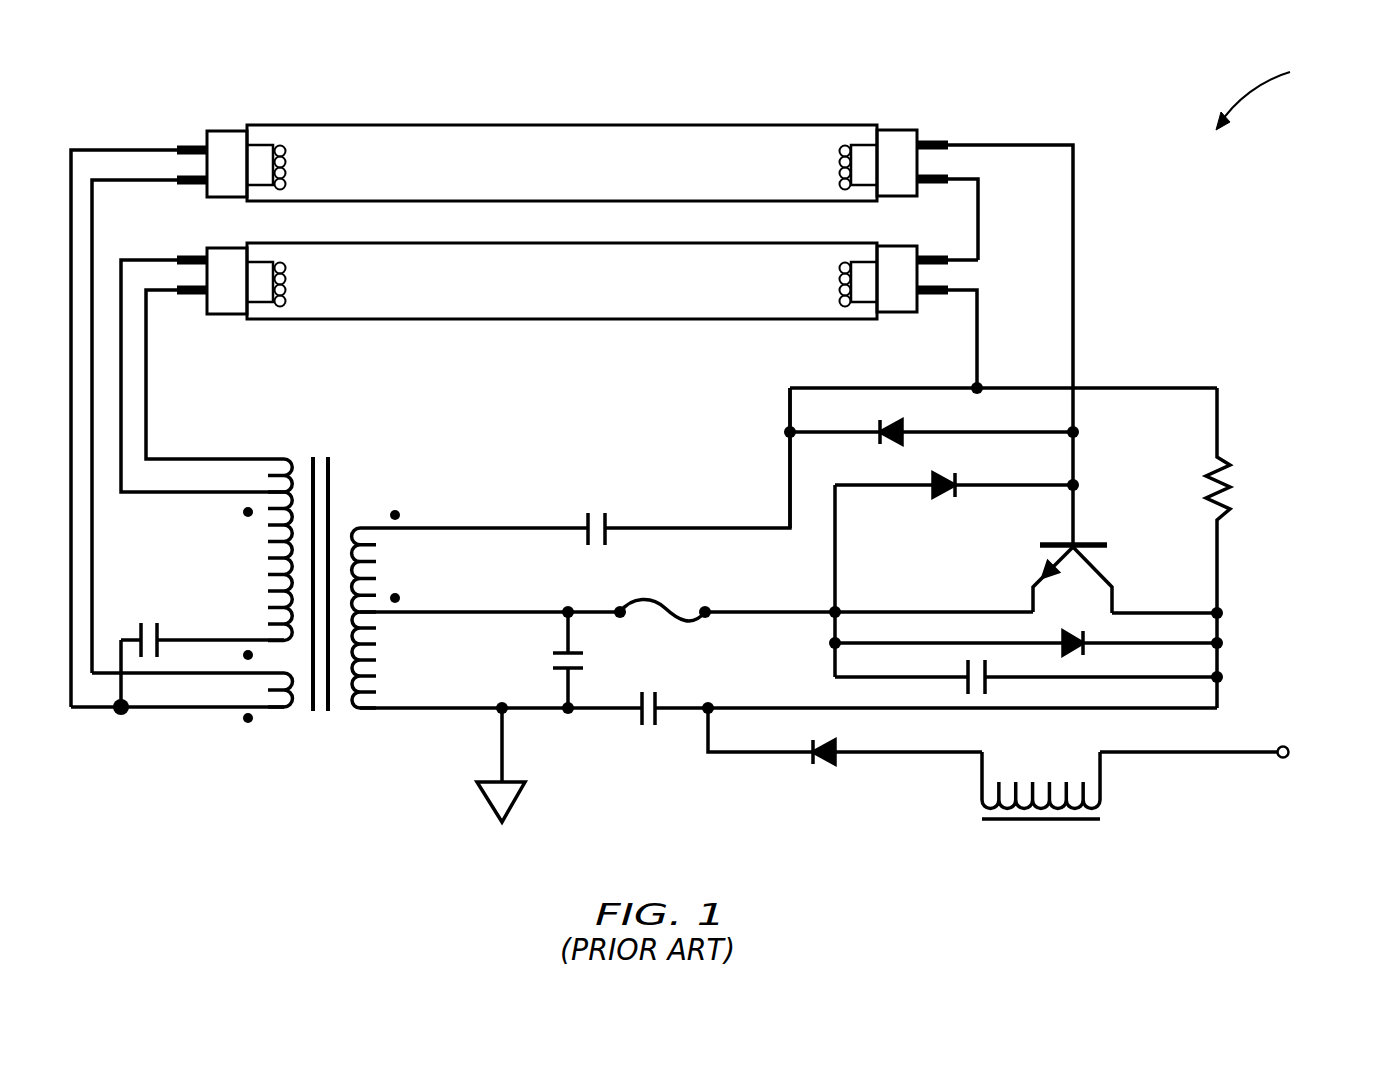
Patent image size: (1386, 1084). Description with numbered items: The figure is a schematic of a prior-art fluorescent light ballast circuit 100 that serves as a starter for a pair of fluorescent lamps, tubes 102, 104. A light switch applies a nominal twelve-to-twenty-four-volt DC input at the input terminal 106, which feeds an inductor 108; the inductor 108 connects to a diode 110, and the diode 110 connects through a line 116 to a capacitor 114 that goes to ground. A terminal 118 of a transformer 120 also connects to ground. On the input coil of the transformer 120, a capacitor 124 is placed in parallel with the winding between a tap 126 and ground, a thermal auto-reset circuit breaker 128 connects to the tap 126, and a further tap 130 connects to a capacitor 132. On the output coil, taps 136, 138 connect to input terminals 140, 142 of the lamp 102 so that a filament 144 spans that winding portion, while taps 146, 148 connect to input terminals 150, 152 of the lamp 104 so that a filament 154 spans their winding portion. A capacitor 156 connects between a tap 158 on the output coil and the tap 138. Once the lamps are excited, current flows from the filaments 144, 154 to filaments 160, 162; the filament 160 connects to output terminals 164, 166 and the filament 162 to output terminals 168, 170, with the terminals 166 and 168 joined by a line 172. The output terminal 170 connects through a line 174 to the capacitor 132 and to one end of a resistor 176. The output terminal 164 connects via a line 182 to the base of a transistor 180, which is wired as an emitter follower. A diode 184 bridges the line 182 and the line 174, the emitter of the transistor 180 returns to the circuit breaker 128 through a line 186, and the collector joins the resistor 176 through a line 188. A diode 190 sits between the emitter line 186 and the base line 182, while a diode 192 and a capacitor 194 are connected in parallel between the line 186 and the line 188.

The fluorescent light ballast circuit 100 is at (1285, 91).
The lamp 102 is at (472, 125).
The lamp 104 is at (482, 321).
The input terminal 106 is at (1289, 750).
The inductor 108 is at (1040, 823).
The diode 110 is at (823, 766).
The capacitor 114 is at (636, 716).
The line 116 is at (736, 760).
The terminal 118 is at (384, 712).
The transformer 120 is at (337, 463).
The capacitor 124 is at (556, 653).
The tap 126 is at (432, 614).
The thermal auto-reset circuit breaker 128 is at (650, 604).
The tap 130 is at (440, 530).
The capacitor 132 is at (622, 500).
The tap 136 is at (163, 675).
The tap 138 is at (152, 710).
The input terminal 140 is at (196, 148).
The input terminal 142 is at (196, 182).
The filament 144 is at (287, 158).
The tap 146 is at (242, 458).
The tap 148 is at (230, 505).
The input terminal 150 is at (196, 258).
The input terminal 152 is at (196, 294).
The filament 154 is at (287, 275).
The capacitor 156 is at (141, 625).
The tap 158 is at (214, 640).
The filament 160 is at (838, 160).
The filament 162 is at (838, 278).
The output terminal 164 is at (936, 143).
The output terminal 166 is at (940, 178).
The output terminal 168 is at (936, 258).
The output terminal 170 is at (946, 290).
The line 172 is at (981, 216).
The line 174 is at (855, 386).
The resistor 176 is at (1230, 470).
The transistor 180 is at (1086, 545).
The line 182 is at (1076, 252).
The diode 184 is at (892, 440).
The line 186 is at (918, 612).
The line 188 is at (1222, 586).
The diode 190 is at (936, 500).
The diode 192 is at (1078, 640).
The capacitor 194 is at (965, 678).